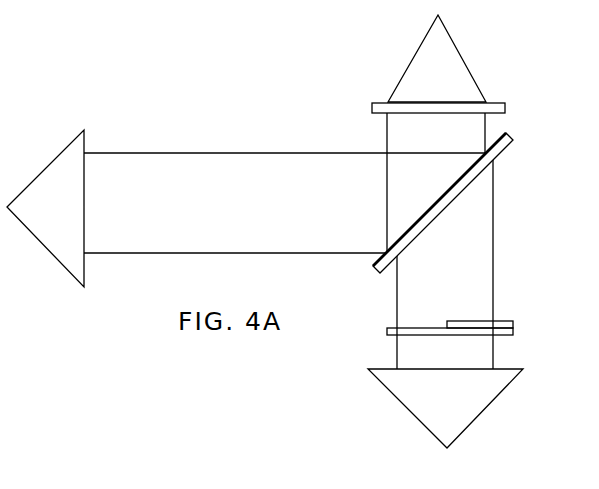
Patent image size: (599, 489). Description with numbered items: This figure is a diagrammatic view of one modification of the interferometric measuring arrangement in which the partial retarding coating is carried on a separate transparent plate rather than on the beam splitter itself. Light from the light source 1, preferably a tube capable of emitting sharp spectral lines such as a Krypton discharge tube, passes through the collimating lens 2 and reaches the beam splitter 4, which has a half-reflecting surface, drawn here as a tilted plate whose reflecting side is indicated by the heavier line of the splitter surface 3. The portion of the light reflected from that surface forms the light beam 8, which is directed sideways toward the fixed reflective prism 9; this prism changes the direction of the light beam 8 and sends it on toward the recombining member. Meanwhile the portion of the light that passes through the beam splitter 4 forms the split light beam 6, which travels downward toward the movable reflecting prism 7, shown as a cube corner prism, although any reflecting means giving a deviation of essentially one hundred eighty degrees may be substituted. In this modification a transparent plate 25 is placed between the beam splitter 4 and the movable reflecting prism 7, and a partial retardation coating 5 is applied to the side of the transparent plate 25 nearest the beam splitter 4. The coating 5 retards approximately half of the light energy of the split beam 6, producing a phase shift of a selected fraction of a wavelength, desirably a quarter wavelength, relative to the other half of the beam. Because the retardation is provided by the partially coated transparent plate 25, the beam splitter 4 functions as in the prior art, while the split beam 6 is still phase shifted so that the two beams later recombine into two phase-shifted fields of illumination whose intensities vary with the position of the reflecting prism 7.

The light source 1 is at (439, 16).
The collimating lens 2 is at (508, 102).
The beam splitter mirror 3 is at (495, 132).
The beam splitter 4 is at (511, 145).
The retardation coating 5 is at (507, 320).
The transparent plate 25 is at (507, 340).
The split light beam 6 is at (493, 350).
The reflecting prism 7 is at (493, 403).
The light beam 8 is at (213, 153).
The reflective prism 9 is at (56, 155).